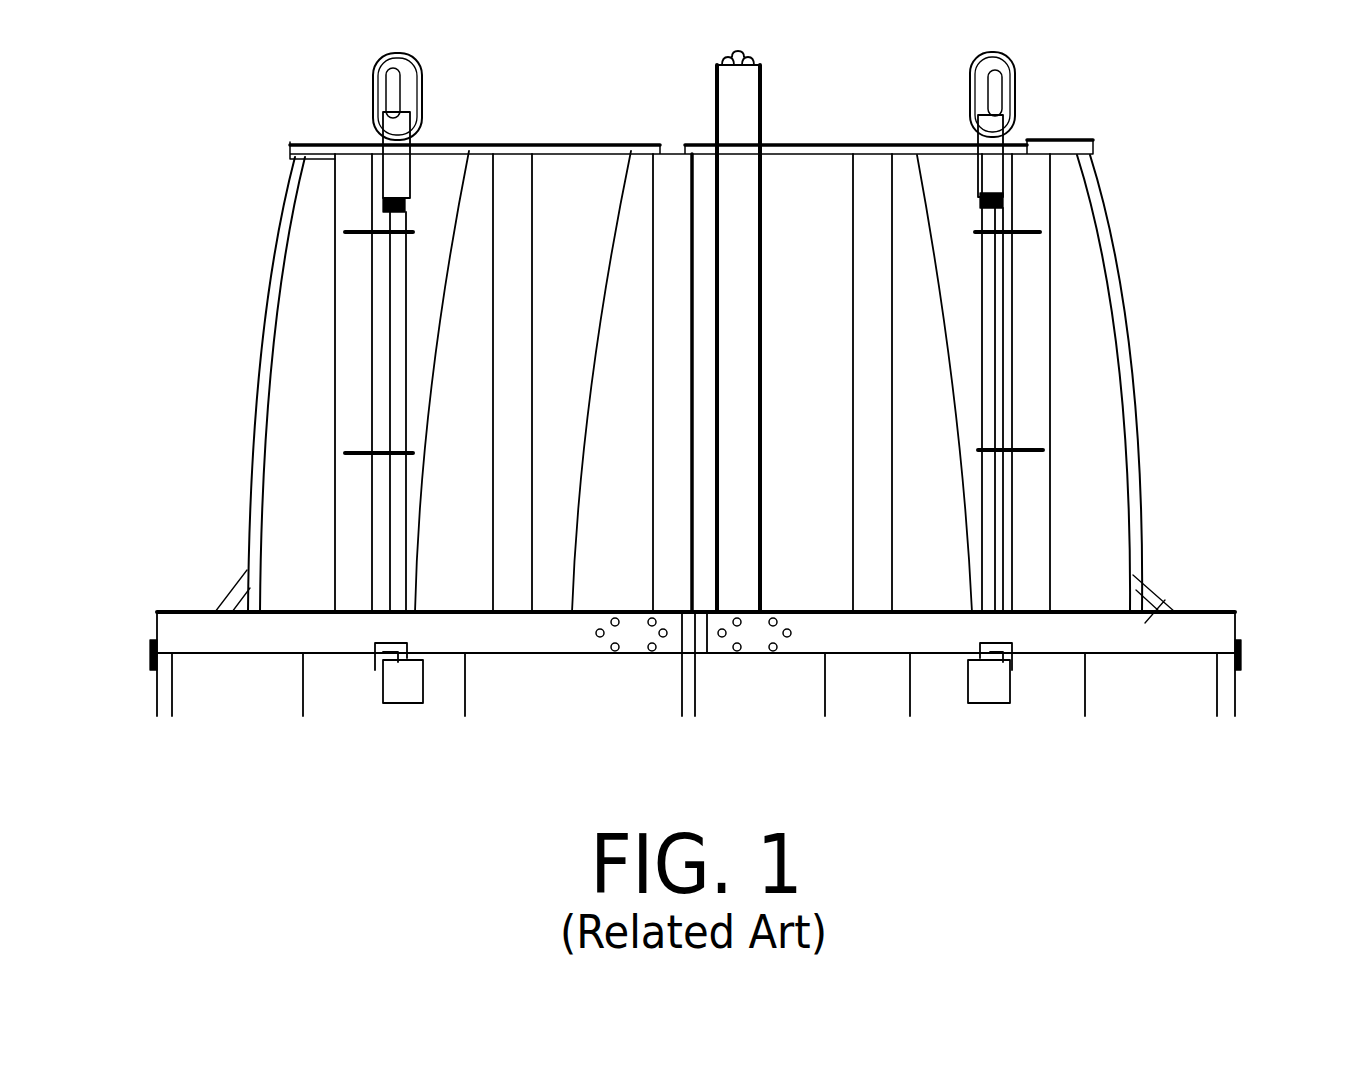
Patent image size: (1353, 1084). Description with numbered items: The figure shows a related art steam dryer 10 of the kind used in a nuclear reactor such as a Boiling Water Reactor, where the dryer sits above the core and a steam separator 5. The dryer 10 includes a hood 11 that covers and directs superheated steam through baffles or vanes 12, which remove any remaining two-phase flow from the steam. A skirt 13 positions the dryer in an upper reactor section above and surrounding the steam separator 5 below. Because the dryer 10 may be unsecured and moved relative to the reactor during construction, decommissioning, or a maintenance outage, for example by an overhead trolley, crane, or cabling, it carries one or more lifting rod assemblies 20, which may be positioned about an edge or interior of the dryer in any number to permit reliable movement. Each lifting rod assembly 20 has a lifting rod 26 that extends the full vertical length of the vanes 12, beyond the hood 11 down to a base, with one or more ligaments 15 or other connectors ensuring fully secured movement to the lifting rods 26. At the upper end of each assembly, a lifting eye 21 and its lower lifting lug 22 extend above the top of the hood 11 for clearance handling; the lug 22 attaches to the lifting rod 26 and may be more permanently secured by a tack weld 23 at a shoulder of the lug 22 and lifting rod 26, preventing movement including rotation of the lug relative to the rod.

The steam separator 5 is at (230, 705).
The steam dryer 10 is at (1150, 623).
The hood 11 is at (257, 447).
The vanes 12 is at (450, 566).
The skirt 13 is at (1233, 689).
The ligaments 15 is at (357, 247).
The lifting rod assembly 20 is at (352, 67).
The lifting eye 21 is at (408, 92).
The lifting lug 22 is at (397, 165).
The tack weld 23 is at (390, 213).
The lifting rod 26 is at (397, 358).